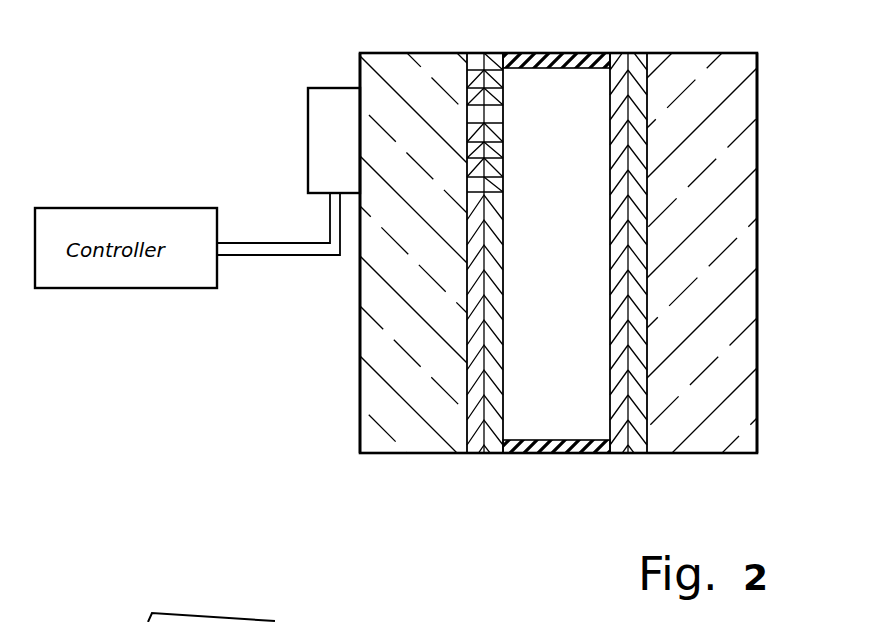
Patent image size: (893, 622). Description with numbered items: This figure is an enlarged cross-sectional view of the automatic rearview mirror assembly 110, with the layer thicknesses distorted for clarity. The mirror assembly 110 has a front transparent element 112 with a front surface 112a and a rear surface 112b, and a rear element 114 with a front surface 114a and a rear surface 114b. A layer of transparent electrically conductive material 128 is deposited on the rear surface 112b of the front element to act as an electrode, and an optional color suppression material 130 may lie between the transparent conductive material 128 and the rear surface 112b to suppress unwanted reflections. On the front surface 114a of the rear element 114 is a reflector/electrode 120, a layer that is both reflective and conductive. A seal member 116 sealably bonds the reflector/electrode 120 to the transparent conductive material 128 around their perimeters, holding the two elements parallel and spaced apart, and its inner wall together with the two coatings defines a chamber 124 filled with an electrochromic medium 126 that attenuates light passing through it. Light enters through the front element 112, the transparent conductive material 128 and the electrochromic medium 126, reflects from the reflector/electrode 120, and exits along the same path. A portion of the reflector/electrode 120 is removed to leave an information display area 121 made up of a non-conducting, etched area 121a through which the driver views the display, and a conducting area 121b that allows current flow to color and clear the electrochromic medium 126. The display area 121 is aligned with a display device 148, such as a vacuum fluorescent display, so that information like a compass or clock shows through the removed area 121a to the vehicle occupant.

The mirror assembly 110 is at (208, 358).
The front transparent element 112 is at (735, 320).
The front surface of front transparent element 112a is at (757, 413).
The rear surface of front transparent element 112b is at (647, 430).
The rear element 114 is at (393, 318).
The front surface of rear element 114a is at (463, 418).
The rear surface of rear element 114b is at (358, 388).
The seal member 116 is at (532, 457).
The reflector/electrode 120 is at (539, 241).
The information display area 121 is at (540, 122).
The non-conducting area 121a is at (499, 115).
The conducting area 121b is at (515, 158).
The chamber 124 is at (574, 333).
The electrochromic medium 126 is at (590, 390).
The transparent electrically conductive material 128 is at (614, 53).
The color suppression material 130 is at (638, 55).
The display device 148 is at (318, 108).